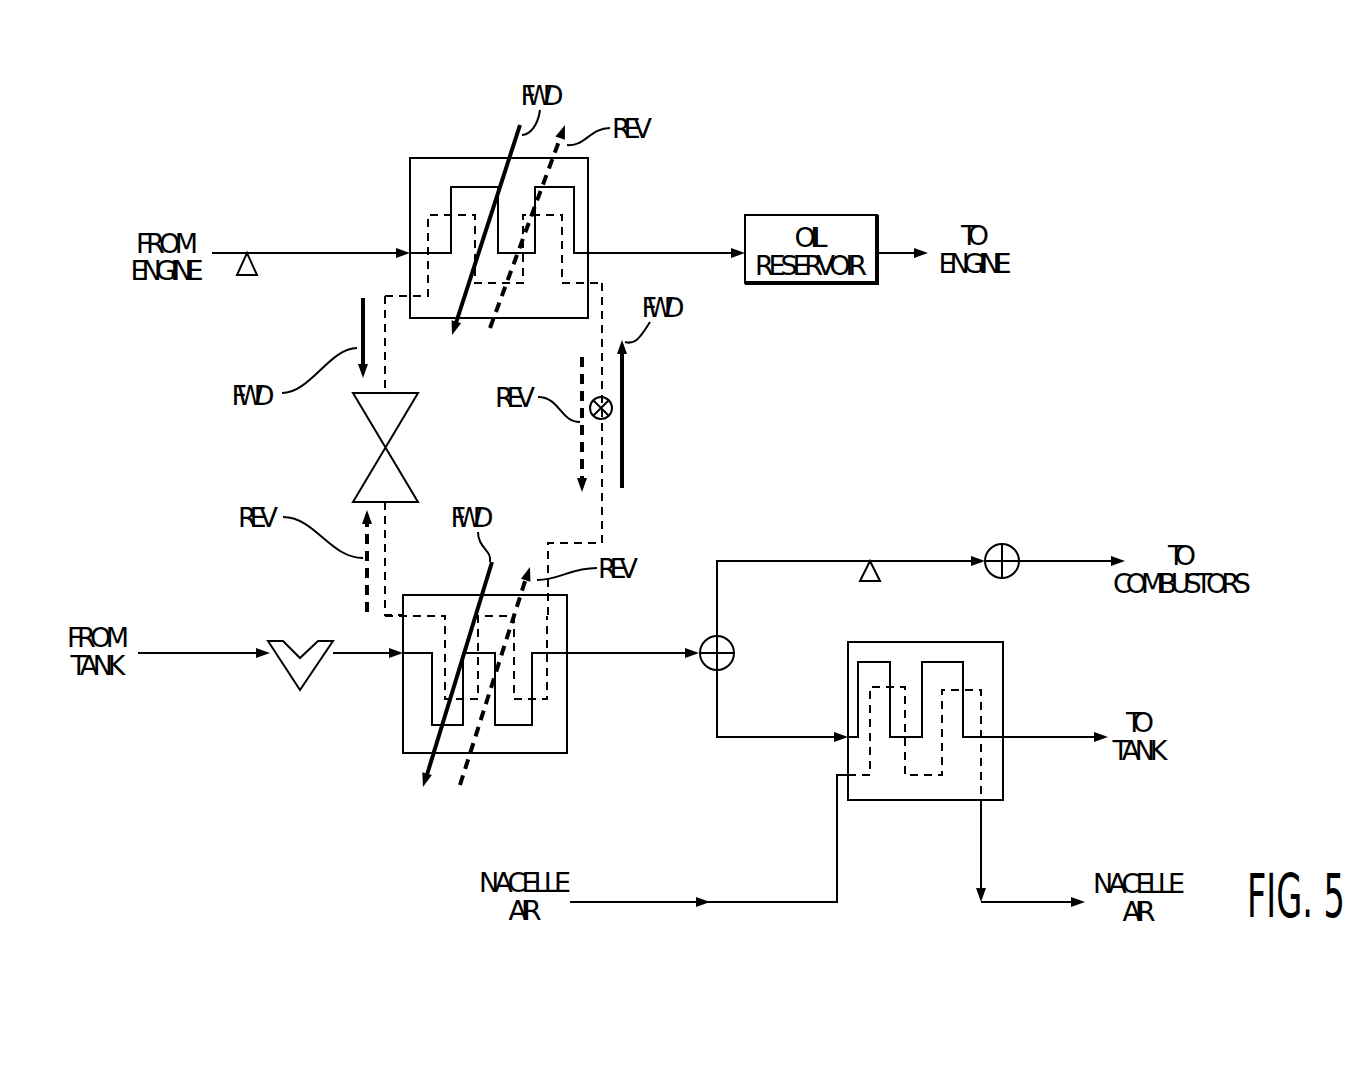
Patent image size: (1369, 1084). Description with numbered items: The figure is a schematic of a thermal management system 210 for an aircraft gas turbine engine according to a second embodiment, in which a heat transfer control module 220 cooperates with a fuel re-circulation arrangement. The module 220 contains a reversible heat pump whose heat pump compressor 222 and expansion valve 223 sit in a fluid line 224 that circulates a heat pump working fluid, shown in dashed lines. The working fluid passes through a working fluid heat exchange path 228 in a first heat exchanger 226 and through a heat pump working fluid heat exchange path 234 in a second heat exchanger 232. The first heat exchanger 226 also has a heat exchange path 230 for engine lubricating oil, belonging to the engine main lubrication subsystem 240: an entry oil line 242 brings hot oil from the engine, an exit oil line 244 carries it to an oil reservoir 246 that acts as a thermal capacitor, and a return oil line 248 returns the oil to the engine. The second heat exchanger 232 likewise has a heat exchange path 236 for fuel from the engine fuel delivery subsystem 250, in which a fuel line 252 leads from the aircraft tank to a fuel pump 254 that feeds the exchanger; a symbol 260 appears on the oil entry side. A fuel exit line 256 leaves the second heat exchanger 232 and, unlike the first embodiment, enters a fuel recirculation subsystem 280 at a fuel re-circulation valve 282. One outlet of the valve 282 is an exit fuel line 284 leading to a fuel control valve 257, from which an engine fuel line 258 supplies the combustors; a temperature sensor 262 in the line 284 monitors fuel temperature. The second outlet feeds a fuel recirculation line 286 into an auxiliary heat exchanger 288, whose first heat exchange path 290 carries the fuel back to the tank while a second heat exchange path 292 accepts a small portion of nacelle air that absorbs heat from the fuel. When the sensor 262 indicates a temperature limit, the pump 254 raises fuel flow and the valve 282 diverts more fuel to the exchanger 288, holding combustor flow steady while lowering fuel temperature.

The thermal management system 210 is at (200, 145).
The heat transfer control module 220 is at (667, 365).
The heat pump compressor 222 is at (367, 417).
The expansion valve 223 is at (612, 408).
The fluid line 224 is at (603, 515).
The first heat exchanger 226 is at (420, 165).
The working fluid heat exchange path 228 is at (428, 228).
The heat exchange path 230 is at (451, 202).
The second heat exchanger 232 is at (567, 735).
The heat pump working fluid heat exchange path 234 is at (567, 618).
The heat exchange path 236 is at (432, 705).
The engine main lubrication subsystem 240 is at (312, 228).
The entry oil line 242 is at (318, 262).
The exit oil line 244 is at (683, 248).
The oil reservoir 246 is at (865, 285).
The return oil line 248 is at (902, 250).
The engine fuel delivery subsystem 250 is at (250, 610).
The fuel line 252 is at (175, 655).
The fuel pump 254 is at (293, 673).
The fuel exit line 256 is at (630, 655).
The fuel control valve 257 is at (1005, 545).
The engine fuel line 258 is at (1080, 560).
The oil pump 260 is at (243, 270).
The temperature sensor 262 is at (860, 578).
The fuel recirculation subsystem 280 is at (825, 515).
The fuel re-circulation valve 282 is at (725, 664).
The exit fuel line 284 is at (745, 561).
The fuel recirculation line 286 is at (717, 735).
The auxiliary heat exchanger 288 is at (1003, 665).
The first heat exchange path 290 is at (882, 660).
The second heat exchange path 292 is at (905, 780).